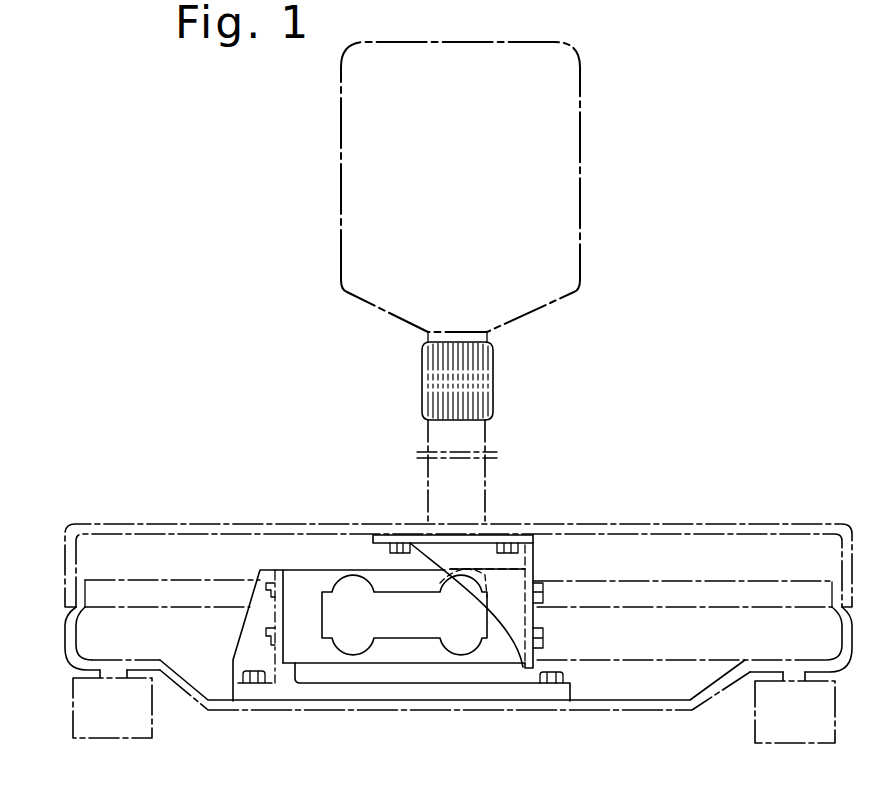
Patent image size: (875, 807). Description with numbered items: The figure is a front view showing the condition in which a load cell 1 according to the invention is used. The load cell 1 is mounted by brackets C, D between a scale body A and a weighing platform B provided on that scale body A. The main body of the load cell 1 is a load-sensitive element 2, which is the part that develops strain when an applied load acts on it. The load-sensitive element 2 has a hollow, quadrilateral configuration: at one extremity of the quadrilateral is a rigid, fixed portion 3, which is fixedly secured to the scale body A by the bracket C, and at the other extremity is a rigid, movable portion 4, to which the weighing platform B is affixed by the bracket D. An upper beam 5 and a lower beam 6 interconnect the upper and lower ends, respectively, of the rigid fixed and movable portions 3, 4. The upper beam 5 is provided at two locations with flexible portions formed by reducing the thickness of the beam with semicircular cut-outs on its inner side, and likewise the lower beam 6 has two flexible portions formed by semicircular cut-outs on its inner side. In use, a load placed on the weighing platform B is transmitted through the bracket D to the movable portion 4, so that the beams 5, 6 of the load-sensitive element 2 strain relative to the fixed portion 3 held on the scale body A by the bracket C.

The load cell 1 is at (414, 606).
The load-sensitive element 2 is at (292, 582).
The fixed portion 3 is at (314, 650).
The movable portion 4 is at (492, 647).
The upper beam 5 is at (385, 577).
The lower beam 6 is at (400, 653).
The scale body A is at (632, 704).
The weighing platform B is at (655, 532).
The bracket C is at (240, 657).
The bracket D is at (478, 555).